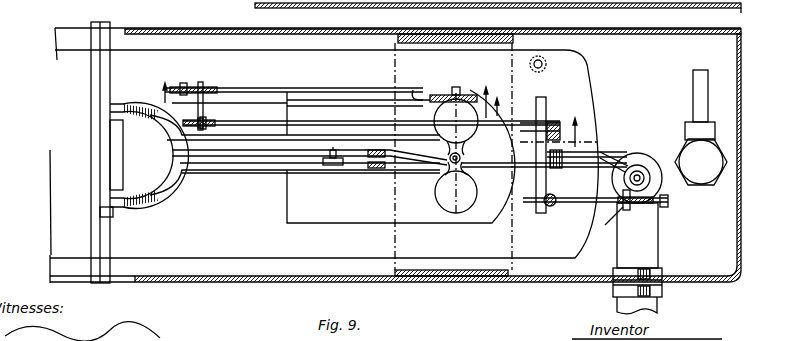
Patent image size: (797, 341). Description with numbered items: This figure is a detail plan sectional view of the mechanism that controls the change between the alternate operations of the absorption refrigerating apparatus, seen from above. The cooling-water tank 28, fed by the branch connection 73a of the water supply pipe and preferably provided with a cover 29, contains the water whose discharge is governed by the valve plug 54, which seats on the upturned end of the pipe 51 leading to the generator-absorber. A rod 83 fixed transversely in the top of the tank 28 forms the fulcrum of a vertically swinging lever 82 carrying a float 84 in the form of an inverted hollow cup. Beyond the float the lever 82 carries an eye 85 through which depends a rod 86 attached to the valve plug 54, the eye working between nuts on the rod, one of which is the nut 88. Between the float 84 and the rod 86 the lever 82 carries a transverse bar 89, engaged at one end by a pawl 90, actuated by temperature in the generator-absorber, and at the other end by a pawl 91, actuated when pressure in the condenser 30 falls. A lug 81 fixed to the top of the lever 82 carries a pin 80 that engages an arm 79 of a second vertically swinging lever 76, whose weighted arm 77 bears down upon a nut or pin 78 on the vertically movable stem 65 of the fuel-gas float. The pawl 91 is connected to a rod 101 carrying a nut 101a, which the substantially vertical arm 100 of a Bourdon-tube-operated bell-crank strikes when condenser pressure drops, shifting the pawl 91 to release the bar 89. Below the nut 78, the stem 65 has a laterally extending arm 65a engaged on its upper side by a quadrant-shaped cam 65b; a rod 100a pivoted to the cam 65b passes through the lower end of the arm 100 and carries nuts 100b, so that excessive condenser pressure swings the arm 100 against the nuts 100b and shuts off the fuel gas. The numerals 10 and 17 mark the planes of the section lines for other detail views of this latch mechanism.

The pointer arrow 10 is at (538, 116).
The pointer pin 17 is at (320, 97).
The tank 28 is at (183, 30).
The cover 29 is at (687, 136).
The condenser 30 is at (584, 61).
The pipe 51 is at (645, 238).
The valve plug 54 is at (662, 185).
The stem 65 is at (455, 165).
The laterally extending arm 65a is at (458, 90).
The cam 65b is at (430, 97).
The branch connection 73a is at (550, 68).
The vertically swinging lever 76 is at (412, 158).
The weighted arm 77 is at (443, 168).
The nut or pin 78 is at (467, 171).
The arm 79 is at (318, 160).
The pin 80 is at (330, 147).
The lug 81 is at (334, 166).
The vertically swinging lever 82 is at (258, 160).
The rod 83 is at (113, 152).
The float 84 is at (292, 200).
The eye 85 is at (630, 165).
The rod 86 is at (637, 170).
The nut 88 is at (650, 172).
The transverse bar 89 is at (536, 148).
The pawl 90 is at (553, 204).
The pawl 91 is at (550, 124).
The arm 100 is at (216, 106).
The rod 100a is at (245, 88).
The nuts 100b is at (183, 83).
The rod 101 is at (371, 113).
The nut 101a is at (205, 129).